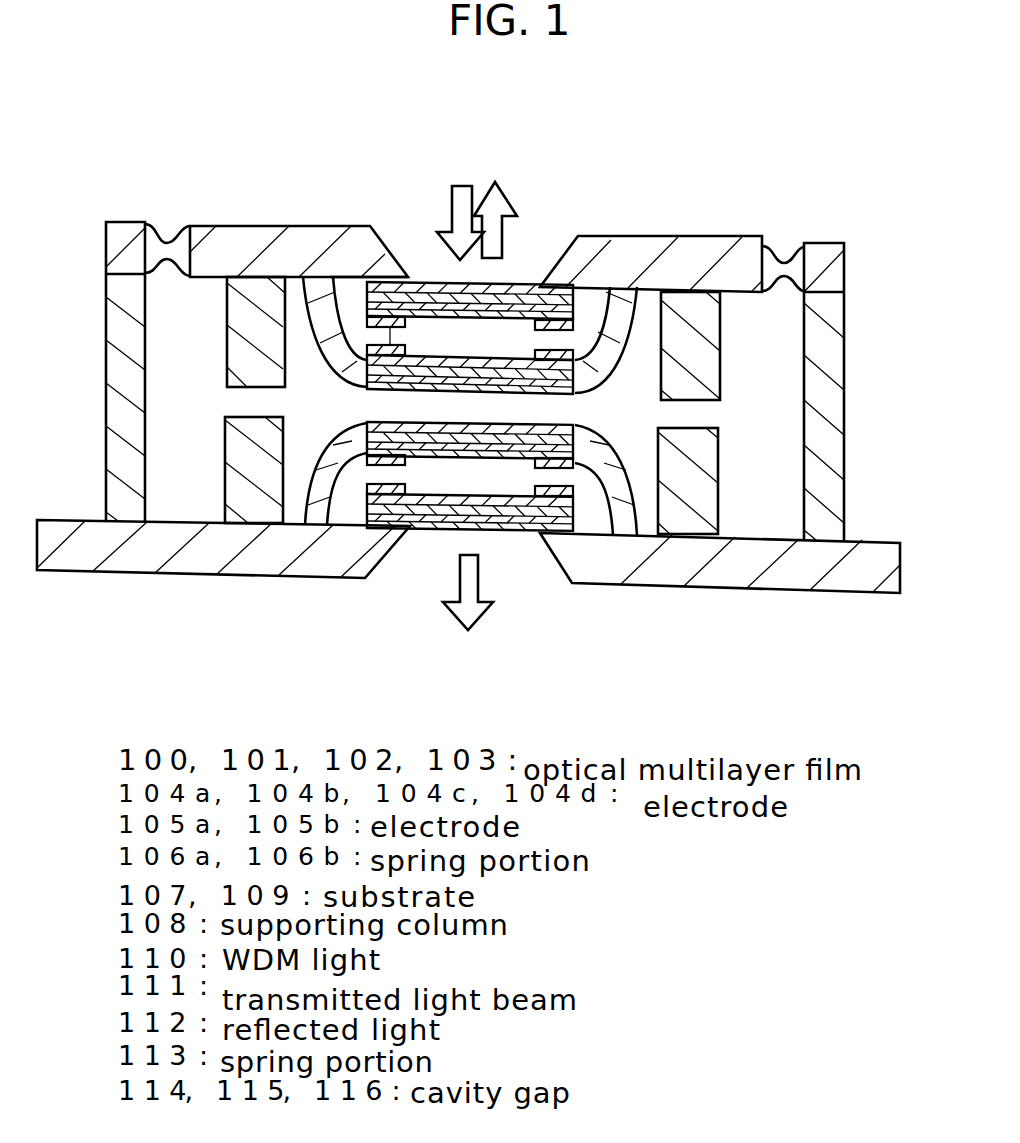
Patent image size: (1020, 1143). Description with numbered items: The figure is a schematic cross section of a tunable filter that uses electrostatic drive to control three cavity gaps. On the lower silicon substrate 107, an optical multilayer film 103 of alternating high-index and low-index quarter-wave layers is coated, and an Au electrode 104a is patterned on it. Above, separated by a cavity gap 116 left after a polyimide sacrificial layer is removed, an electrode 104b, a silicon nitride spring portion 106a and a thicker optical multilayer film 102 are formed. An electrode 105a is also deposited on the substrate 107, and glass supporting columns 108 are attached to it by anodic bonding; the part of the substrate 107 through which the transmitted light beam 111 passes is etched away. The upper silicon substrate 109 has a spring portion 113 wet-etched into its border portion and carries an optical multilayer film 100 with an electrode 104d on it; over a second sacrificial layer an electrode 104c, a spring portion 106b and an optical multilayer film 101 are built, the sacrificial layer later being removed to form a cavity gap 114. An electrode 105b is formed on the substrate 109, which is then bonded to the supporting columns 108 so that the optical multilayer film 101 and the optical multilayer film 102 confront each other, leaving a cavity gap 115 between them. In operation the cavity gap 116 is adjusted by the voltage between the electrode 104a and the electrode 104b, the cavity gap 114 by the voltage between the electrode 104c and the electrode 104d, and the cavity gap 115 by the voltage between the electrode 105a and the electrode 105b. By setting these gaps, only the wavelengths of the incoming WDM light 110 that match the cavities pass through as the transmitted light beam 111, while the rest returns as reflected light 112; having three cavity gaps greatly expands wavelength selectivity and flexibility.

The optical multilayer film 100 is at (493, 293).
The optical multilayer film 101 is at (558, 400).
The optical multilayer film 102 is at (513, 400).
The optical multilayer film 103 is at (485, 515).
The electrode 104a is at (402, 492).
The electrode 104b is at (387, 462).
The electrode 104c is at (410, 282).
The electrode 104d is at (360, 277).
The electrode 105a is at (240, 505).
The electrode 105b is at (263, 293).
The spring portion 106a is at (325, 495).
The spring portion 106b is at (615, 325).
The substrate 107 is at (735, 570).
The supporting column 108 is at (826, 505).
The substrate 109 is at (288, 245).
The WDM light 110 is at (448, 188).
The transmitted light beam 111 is at (460, 632).
The reflected light 112 is at (513, 190).
The spring portion 113 is at (780, 255).
The cavity gap 114 is at (507, 338).
The cavity gap 115 is at (435, 468).
The cavity gap 116 is at (465, 415).